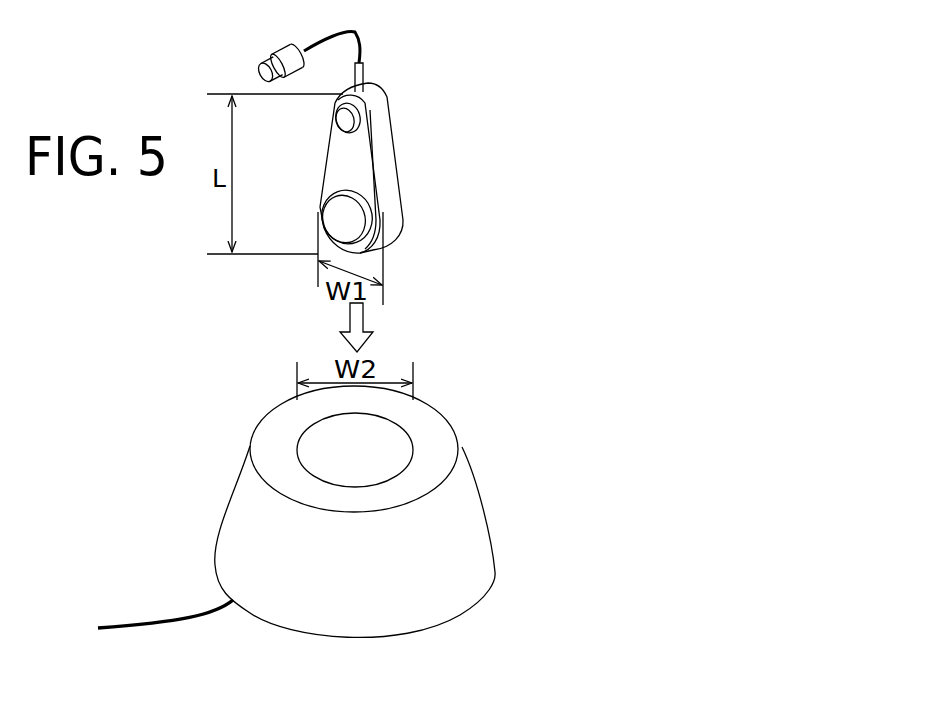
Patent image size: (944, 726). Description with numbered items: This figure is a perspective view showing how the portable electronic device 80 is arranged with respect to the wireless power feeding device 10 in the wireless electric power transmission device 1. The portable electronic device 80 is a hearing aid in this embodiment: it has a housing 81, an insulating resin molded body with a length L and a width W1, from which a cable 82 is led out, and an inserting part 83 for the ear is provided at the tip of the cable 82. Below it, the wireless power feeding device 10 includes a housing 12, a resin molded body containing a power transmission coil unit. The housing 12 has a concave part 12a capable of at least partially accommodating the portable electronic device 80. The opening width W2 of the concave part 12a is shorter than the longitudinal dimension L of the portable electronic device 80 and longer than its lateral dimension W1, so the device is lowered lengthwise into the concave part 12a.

The wireless electric power transmission device 1 is at (452, 675).
The wireless power feeding device 10 is at (498, 572).
The housing 12 is at (475, 502).
The concave part 12a is at (397, 458).
The portable electronic device 80 is at (445, 60).
The housing 81 is at (385, 128).
The cable 82 is at (365, 47).
The inserting part 83 is at (253, 70).